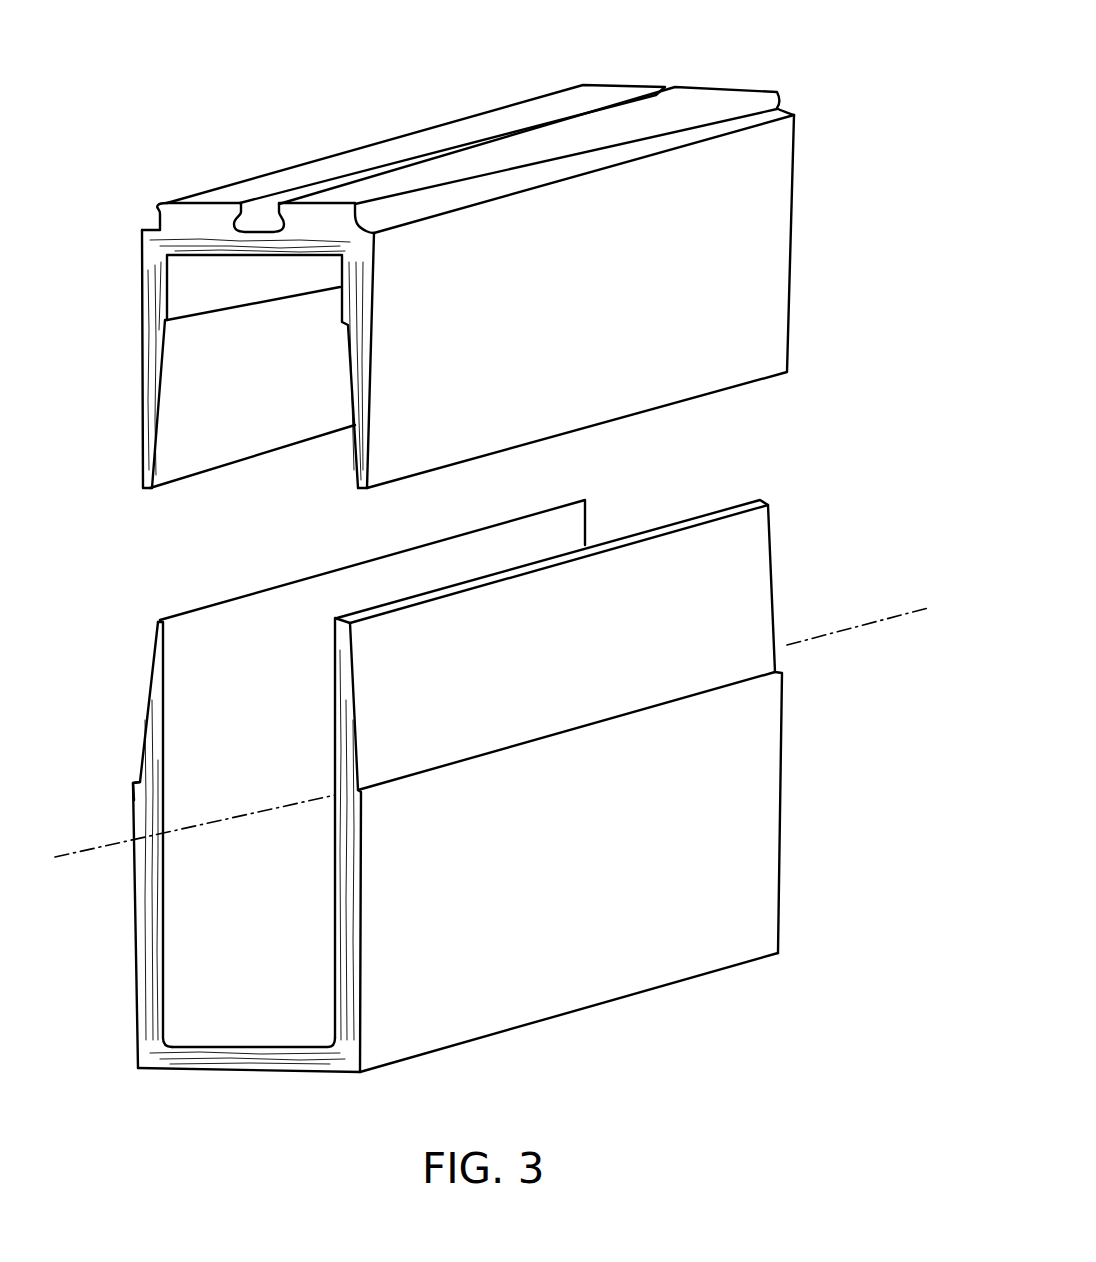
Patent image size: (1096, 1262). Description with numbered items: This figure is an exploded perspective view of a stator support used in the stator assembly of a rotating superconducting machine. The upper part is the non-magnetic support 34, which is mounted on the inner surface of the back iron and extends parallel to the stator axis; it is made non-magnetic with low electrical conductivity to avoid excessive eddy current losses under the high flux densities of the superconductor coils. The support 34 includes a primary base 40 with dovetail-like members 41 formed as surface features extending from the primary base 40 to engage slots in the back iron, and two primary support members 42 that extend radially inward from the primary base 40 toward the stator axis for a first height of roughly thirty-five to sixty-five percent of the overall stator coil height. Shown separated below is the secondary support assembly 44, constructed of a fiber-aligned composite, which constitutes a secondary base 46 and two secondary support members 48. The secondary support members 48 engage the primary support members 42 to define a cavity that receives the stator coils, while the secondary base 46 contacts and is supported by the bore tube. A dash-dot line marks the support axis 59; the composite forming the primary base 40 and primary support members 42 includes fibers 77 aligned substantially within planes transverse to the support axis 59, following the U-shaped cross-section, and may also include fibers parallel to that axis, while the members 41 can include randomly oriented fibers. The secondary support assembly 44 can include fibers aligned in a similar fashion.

The non-magnetic support 34 is at (832, 70).
The primary base 40 is at (153, 222).
The dovetail-like member 41 is at (190, 195).
The primary support member 42 is at (794, 258).
The secondary support assembly 44 is at (830, 542).
The secondary base 46 is at (207, 1070).
The secondary support member 48 is at (133, 790).
The support axis 59 is at (848, 632).
The fibers 77 is at (150, 388).